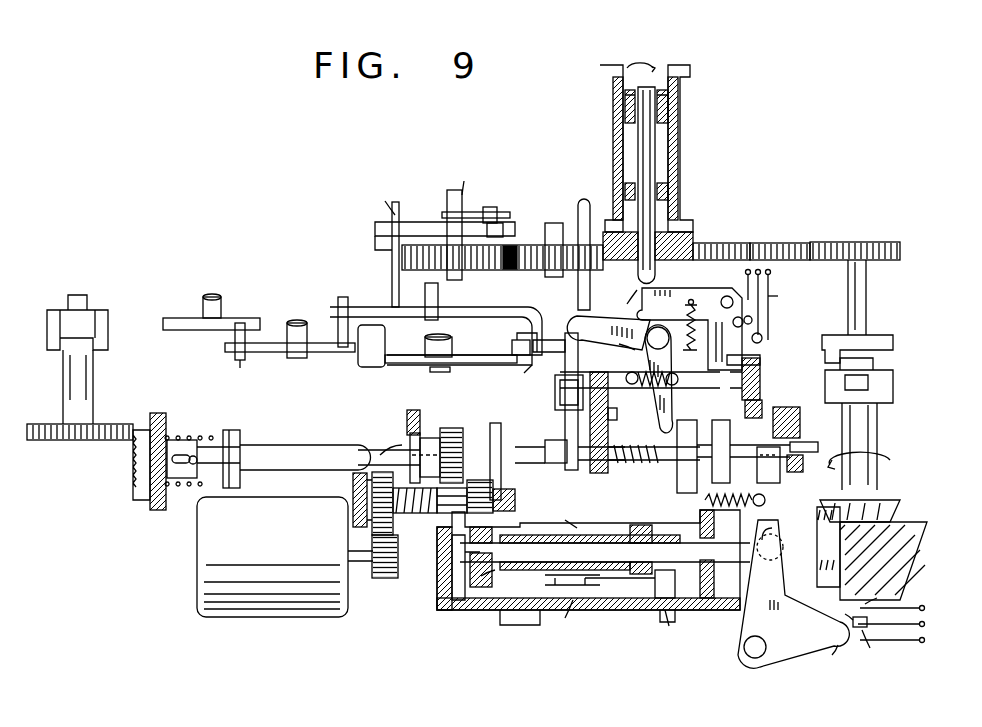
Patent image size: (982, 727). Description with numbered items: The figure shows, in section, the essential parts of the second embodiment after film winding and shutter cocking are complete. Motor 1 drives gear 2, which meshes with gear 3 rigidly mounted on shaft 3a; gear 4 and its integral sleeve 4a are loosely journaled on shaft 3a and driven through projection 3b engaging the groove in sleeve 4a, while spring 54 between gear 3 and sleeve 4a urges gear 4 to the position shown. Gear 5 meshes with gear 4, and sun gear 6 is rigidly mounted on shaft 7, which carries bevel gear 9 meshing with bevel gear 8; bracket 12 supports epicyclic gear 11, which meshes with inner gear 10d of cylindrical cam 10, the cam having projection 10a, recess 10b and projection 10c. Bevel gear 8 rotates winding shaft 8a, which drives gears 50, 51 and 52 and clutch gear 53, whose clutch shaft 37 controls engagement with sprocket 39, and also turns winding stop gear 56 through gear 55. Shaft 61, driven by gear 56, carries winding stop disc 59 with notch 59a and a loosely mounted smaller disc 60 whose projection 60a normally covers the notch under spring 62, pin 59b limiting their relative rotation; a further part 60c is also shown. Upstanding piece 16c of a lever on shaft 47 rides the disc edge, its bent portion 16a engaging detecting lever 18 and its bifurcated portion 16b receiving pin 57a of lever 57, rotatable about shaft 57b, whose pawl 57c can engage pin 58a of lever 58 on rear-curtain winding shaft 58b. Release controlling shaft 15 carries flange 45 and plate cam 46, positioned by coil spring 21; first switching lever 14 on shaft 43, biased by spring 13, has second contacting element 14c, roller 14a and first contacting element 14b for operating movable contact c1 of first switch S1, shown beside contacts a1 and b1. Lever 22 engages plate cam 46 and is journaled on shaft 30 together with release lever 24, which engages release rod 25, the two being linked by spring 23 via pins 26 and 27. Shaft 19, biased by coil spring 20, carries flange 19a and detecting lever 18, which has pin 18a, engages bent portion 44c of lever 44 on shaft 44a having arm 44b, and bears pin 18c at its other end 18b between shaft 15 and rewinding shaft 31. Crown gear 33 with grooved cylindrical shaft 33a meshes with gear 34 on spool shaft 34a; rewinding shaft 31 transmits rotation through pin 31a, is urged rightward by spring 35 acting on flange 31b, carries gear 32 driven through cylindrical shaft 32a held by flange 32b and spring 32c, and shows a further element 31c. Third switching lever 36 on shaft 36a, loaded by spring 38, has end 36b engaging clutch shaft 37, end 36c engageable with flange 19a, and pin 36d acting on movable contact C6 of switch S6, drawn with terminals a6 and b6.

The motor 1 is at (250, 617).
The gear 2 is at (385, 579).
The gear 3 is at (374, 520).
The shaft 3a is at (412, 513).
The projection 3b is at (447, 513).
The gear 4 is at (488, 513).
The sleeve 4a is at (500, 489).
The gear 5 is at (494, 580).
The sun gear 6 is at (559, 519).
The shaft 7 is at (530, 562).
The bevel gear 8 is at (900, 510).
The winding shaft 8a is at (877, 474).
The bevel gear 9 is at (835, 587).
The cylindrical cam 10 is at (628, 600).
The projection 10a is at (766, 505).
The recess 10b is at (760, 490).
The projection 10c is at (670, 627).
The inner gear 10d is at (563, 622).
The epicyclic gear 11 is at (590, 588).
The bracket 12 is at (663, 575).
The spring 13 is at (760, 480).
The first switching lever 14 is at (775, 650).
The roller 14a is at (783, 555).
The first contacting element 14b is at (833, 659).
The second contacting element 14c is at (803, 450).
The release controlling shaft 15 is at (790, 407).
The bent portion 16a is at (522, 375).
The bifurcated portion 16b is at (335, 307).
The upstanding piece 16c is at (392, 208).
The detecting lever 18 is at (586, 357).
The pin 18a is at (550, 340).
The other end of detecting lever 18b is at (558, 395).
The pin 18c is at (548, 445).
The shaft 19 is at (720, 410).
The flange 19a is at (762, 390).
The coil spring 20 is at (608, 415).
The coil spring 21 is at (636, 463).
The lever 22 is at (615, 340).
The spring 23 is at (617, 414).
The release lever 24 is at (600, 322).
The release rod 25 is at (598, 193).
The pin 26 is at (632, 372).
The pin 27 is at (680, 378).
The shaft 30 is at (648, 330).
The rewinding shaft 31 is at (305, 445).
The pin 31a is at (496, 423).
The flange 31b is at (240, 437).
The pin 31c is at (195, 456).
The gear 32 is at (438, 440).
The cylindrical shaft 32a is at (446, 430).
The flange 32b is at (410, 435).
The spring 32c is at (414, 398).
The crown gear 33 is at (150, 487).
The cylindrical shaft 33a is at (142, 500).
The gear 34 is at (45, 440).
The shaft 34a is at (93, 390).
The spring 35 is at (182, 490).
The third switching lever 36 is at (690, 290).
The shaft 36a is at (727, 296).
The end of third switching lever 36b is at (617, 289).
The end of switching lever 36c is at (760, 357).
The pin 36d is at (762, 338).
The clutch shaft 37 is at (652, 140).
The spring 38 is at (686, 318).
The sprocket 39 is at (680, 152).
The shaft 43 is at (752, 653).
The lever 44 is at (402, 355).
The shaft 44a is at (452, 345).
The arm 44b is at (360, 358).
The bent portion 44c is at (517, 333).
The flange 45 is at (760, 445).
The plate cam 46 is at (698, 410).
The shaft 47 is at (438, 298).
The gear 50 is at (870, 242).
The gear 51 is at (785, 243).
The gear 52 is at (740, 243).
The clutch gear 53 is at (693, 240).
The spring 54 is at (379, 438).
The gear 55 is at (550, 224).
The winding stop gear 56 is at (470, 270).
The lever 57 is at (272, 352).
The pin 57a is at (345, 297).
The shaft 57b is at (290, 323).
The pawl 57c is at (235, 345).
The lever 58 is at (180, 318).
The pin 58a is at (220, 369).
The winding shaft 58b is at (221, 298).
The winding stop disc 59 is at (512, 225).
The notch 59a is at (380, 250).
The pin 59b is at (490, 207).
The disc 60 is at (445, 212).
The projection 60a is at (386, 196).
The block 60c is at (500, 223).
The shaft 61 is at (447, 195).
The spring 62 is at (460, 180).
The first switch S1 is at (937, 619).
The switch contact a1 is at (874, 647).
The switch contact b1 is at (881, 595).
The movable contact c1 is at (838, 611).
The switch S6 is at (782, 272).
The switch contact a6 is at (752, 320).
The terminal b6 is at (745, 326).
The movable contact C6 is at (783, 295).